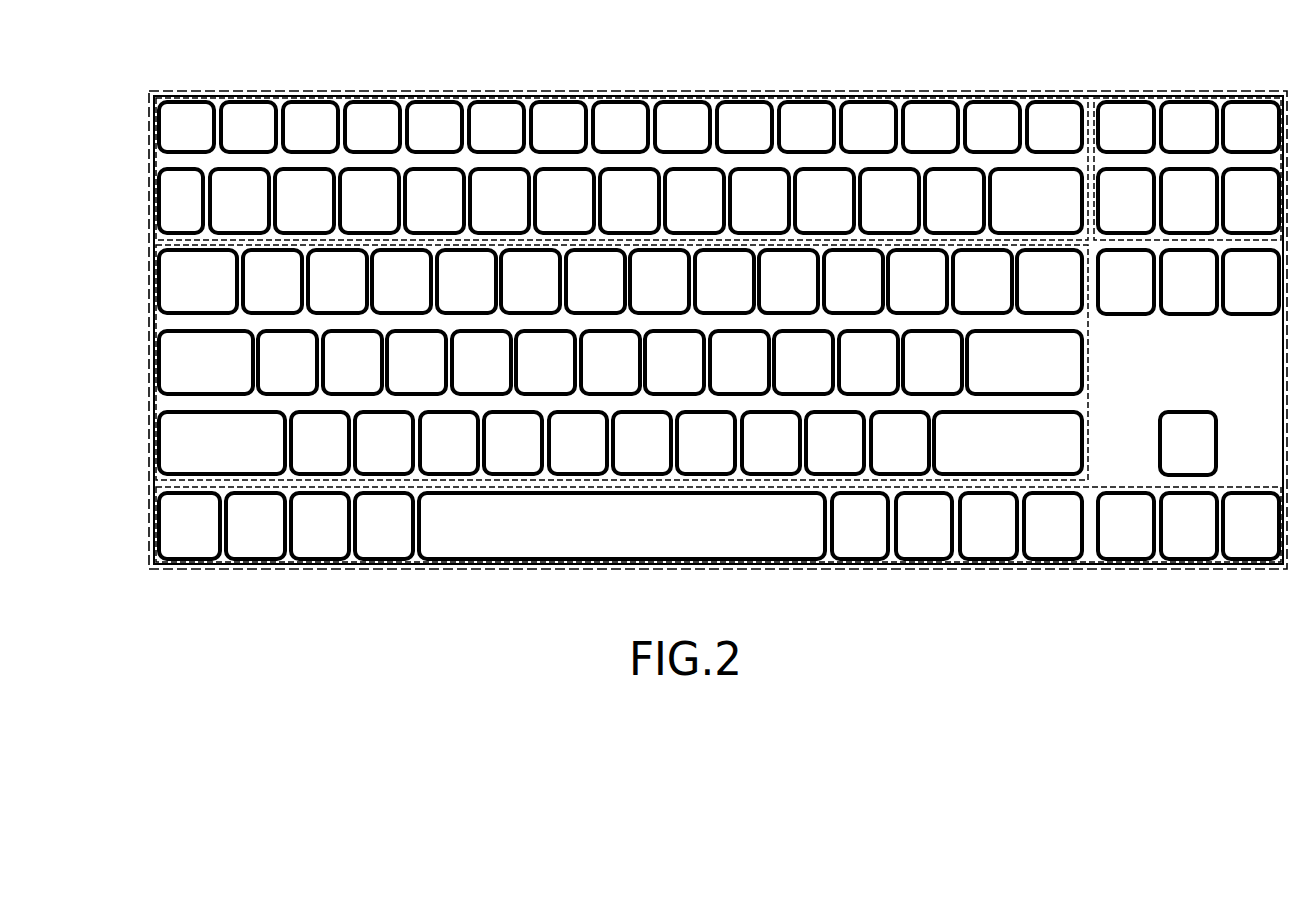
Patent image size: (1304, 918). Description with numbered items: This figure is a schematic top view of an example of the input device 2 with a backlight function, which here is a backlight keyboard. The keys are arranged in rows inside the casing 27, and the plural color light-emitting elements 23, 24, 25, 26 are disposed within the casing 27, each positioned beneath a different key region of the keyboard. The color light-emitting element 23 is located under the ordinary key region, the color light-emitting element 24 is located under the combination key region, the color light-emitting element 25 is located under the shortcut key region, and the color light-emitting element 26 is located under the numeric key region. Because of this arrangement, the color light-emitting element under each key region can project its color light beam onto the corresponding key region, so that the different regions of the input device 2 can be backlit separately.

The input device 2 is at (325, 93).
The color light-emitting element 23 is at (153, 338).
The color light-emitting element 24 is at (152, 518).
The color light-emitting element 25 is at (903, 93).
The color light-emitting element 26 is at (1193, 93).
The casing 27 is at (153, 212).